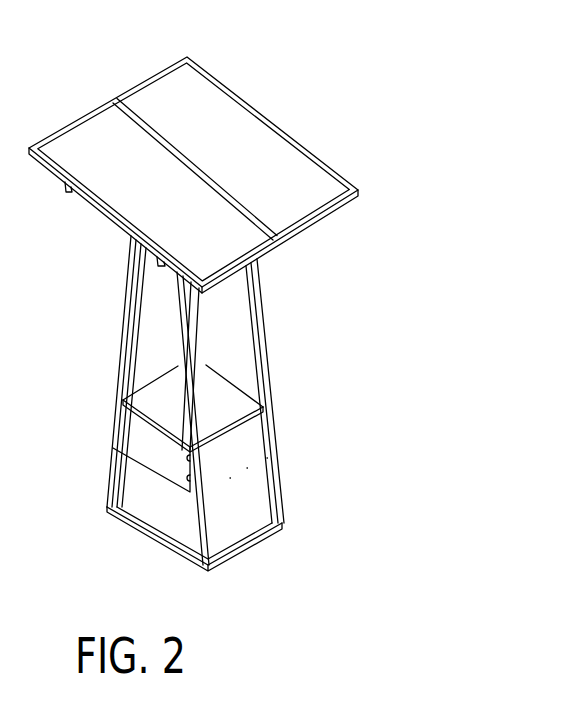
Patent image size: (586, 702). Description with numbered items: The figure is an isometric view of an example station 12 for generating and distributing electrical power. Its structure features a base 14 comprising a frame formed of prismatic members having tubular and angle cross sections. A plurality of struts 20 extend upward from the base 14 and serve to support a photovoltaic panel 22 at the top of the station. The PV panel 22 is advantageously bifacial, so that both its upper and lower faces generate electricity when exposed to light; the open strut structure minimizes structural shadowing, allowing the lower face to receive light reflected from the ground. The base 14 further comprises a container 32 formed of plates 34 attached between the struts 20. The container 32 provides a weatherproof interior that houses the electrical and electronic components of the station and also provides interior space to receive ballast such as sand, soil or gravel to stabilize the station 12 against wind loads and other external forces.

The station for generating and distributing electrical power 12 is at (291, 314).
The photovoltaic panel 22 is at (285, 157).
The struts 20 is at (263, 343).
The container 32 is at (233, 470).
The plates 34 is at (258, 482).
The base 14 is at (272, 530).